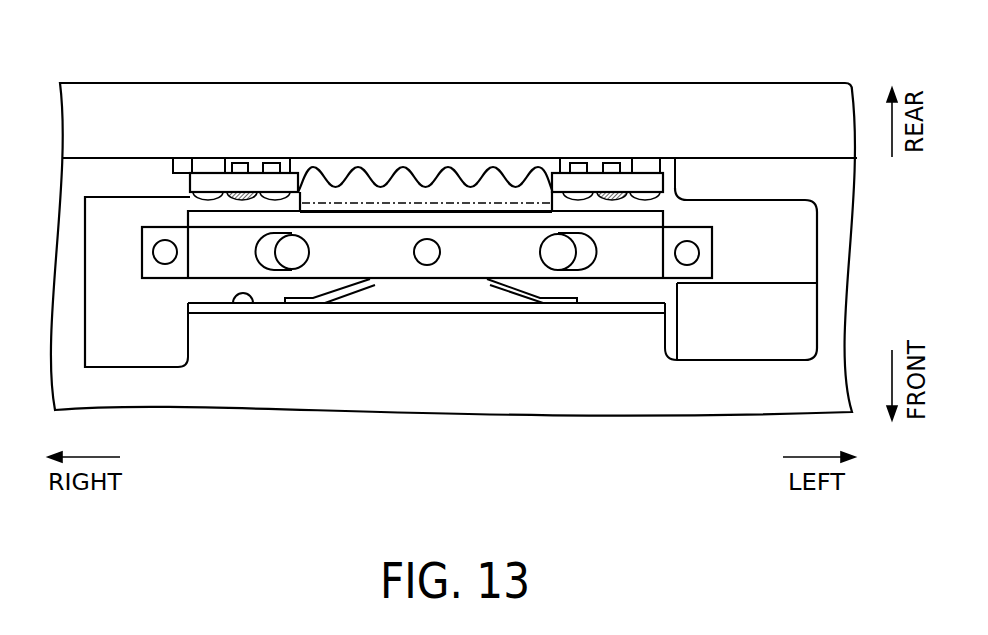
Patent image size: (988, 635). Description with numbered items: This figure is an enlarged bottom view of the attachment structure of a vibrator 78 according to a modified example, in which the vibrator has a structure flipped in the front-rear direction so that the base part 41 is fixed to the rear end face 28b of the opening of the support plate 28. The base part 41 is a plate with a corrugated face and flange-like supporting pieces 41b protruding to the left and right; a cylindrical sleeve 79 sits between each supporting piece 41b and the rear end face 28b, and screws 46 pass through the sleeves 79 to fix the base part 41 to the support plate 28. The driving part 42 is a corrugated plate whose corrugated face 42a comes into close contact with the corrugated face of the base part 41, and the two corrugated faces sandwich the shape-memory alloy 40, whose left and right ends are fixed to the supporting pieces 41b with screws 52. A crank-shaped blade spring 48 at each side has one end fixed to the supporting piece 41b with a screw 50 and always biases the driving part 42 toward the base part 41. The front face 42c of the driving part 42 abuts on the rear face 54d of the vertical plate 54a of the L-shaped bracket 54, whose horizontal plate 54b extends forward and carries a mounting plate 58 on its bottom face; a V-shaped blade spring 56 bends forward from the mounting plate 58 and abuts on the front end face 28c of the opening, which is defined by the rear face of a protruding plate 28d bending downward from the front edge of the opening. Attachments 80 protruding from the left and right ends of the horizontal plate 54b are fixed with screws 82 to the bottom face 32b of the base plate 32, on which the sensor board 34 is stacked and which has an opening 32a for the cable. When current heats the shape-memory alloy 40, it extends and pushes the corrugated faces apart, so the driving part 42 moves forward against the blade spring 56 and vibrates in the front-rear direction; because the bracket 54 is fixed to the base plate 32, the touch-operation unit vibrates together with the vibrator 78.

The support plate 28 is at (737, 414).
The rear end face 28b is at (521, 160).
The front end face 28c is at (248, 308).
The protruding plate 28d is at (292, 308).
The base plate 32 is at (780, 252).
The opening 32a is at (782, 293).
The bottom face 32b is at (100, 232).
The board 34 is at (780, 330).
The shape-memory alloy 40 is at (371, 180).
The base part 41 is at (335, 176).
The supporting piece 41b is at (187, 198).
The driving part 42 is at (402, 175).
The corrugated face 42a is at (463, 180).
The front face 42c is at (395, 213).
The screw 46 is at (192, 182).
The blade spring 48 is at (292, 209).
The screw 50 is at (240, 163).
The screw 52 is at (273, 163).
The bracket 54 is at (211, 286).
The vertical plate 54a is at (200, 220).
The horizontal plate 54b is at (154, 252).
The rear face 54d is at (455, 206).
The blade spring 56 is at (357, 294).
The mounting plate 58 is at (338, 259).
The vibrator 78 is at (330, 30).
The sleeve 79 is at (210, 168).
The attachment 80 is at (163, 280).
The screw 82 is at (202, 236).